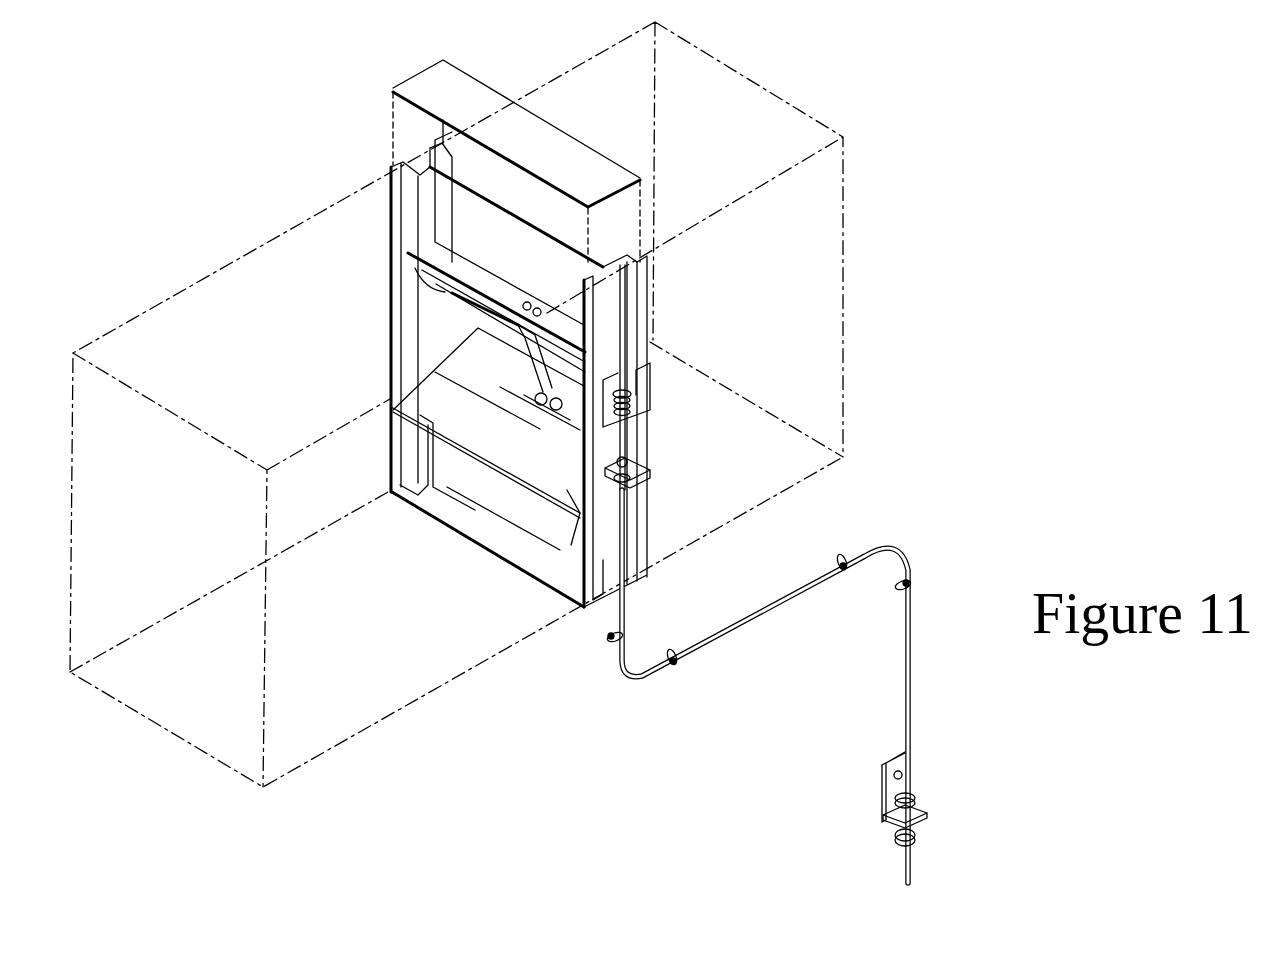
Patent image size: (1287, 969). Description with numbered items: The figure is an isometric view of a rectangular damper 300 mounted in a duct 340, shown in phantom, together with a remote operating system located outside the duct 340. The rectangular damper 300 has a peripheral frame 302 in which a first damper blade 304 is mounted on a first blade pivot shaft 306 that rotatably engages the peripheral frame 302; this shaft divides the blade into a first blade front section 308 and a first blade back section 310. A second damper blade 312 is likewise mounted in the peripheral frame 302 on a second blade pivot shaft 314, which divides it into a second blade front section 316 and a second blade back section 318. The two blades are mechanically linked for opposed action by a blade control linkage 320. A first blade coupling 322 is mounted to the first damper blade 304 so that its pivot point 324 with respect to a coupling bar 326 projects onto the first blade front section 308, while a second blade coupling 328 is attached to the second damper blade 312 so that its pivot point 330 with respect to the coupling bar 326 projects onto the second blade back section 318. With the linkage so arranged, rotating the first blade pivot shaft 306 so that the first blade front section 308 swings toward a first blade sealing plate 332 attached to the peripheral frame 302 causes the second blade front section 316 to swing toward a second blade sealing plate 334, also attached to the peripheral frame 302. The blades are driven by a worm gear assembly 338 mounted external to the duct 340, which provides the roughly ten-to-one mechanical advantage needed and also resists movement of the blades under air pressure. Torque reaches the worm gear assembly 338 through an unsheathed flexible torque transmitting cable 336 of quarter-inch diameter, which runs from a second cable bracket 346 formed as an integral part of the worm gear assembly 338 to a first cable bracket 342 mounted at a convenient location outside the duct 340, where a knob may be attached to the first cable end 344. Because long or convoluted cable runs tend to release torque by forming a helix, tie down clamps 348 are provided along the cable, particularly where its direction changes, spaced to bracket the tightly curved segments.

The rectangular damper 300 is at (290, 197).
The peripheral frame 302 is at (690, 278).
The first damper blade 304 is at (410, 274).
The first blade pivot shaft 306 is at (572, 270).
The first blade front section 308 is at (408, 262).
The first blade back section 310 is at (577, 299).
The second damper blade 312 is at (395, 412).
The second blade pivot shaft 314 is at (385, 408).
The second blade front section 316 is at (437, 418).
The second blade back section 318 is at (437, 487).
The blade control linkage 320 is at (500, 387).
The first blade coupling 322 is at (503, 310).
The pivot point 324 is at (574, 300).
The coupling bar 326 is at (598, 343).
The second blade coupling 328 is at (523, 405).
The pivot point 330 is at (571, 545).
The first blade sealing plate 332 is at (455, 215).
The second blade sealing plate 334 is at (447, 485).
The unsheathed flexible torque transmitting cable 336 is at (745, 620).
The worm gear assembly 338 is at (667, 387).
The duct 340 is at (757, 80).
The first cable bracket 342 is at (931, 778).
The first cable end 344 is at (910, 882).
The second cable bracket 346 is at (667, 465).
The tie down clamps 348 is at (627, 638).